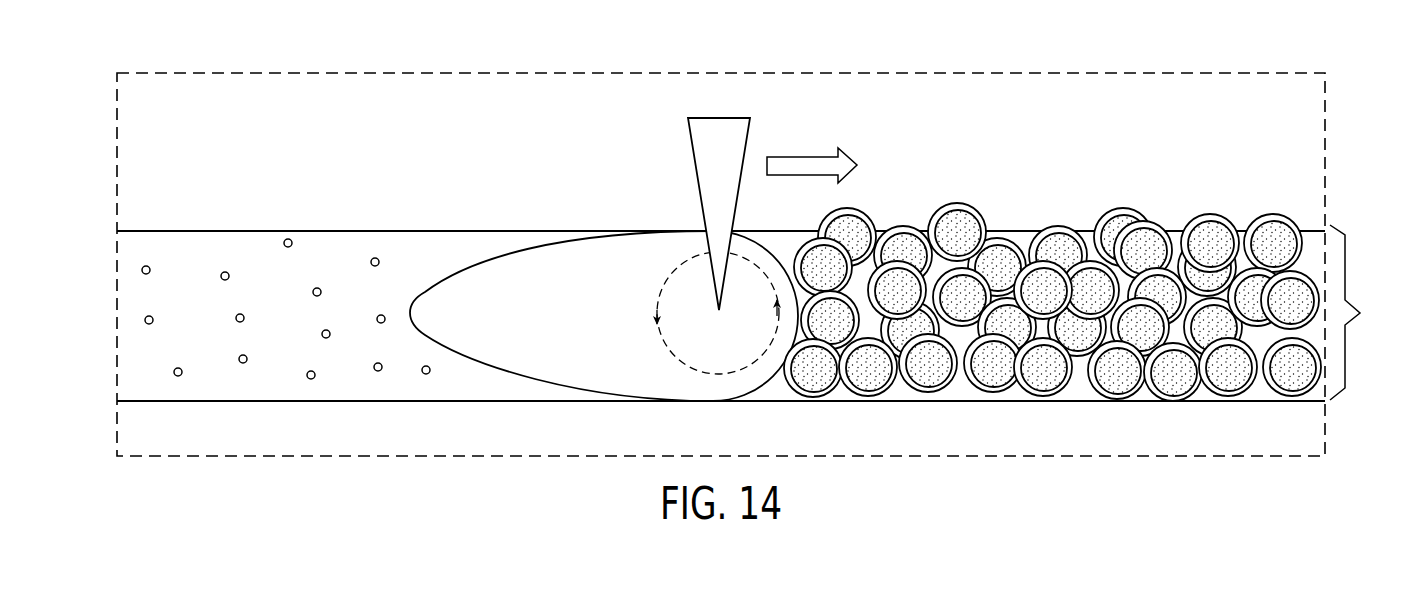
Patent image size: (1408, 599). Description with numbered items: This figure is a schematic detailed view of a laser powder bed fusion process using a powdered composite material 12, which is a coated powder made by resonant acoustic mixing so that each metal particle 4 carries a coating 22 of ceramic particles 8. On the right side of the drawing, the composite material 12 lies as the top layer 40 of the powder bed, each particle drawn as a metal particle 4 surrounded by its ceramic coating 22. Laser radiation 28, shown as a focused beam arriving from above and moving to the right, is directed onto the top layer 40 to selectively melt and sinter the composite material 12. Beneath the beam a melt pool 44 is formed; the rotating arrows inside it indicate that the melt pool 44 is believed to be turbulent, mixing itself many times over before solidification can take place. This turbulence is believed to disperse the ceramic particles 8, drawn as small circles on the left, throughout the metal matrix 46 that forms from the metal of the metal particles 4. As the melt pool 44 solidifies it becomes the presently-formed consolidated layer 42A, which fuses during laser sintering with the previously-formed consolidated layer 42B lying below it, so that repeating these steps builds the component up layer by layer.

The metal particles 4 is at (958, 228).
The ceramic particles 8 is at (233, 266).
The powdered composite material 12 is at (1181, 128).
The coating 22 is at (1072, 280).
The laser radiation 28 is at (712, 153).
The top layer 40 is at (1087, 280).
The presently-formed consolidated layer 42A is at (136, 357).
The previously-formed consolidated layer 42B is at (935, 438).
The melt pool 44 is at (521, 363).
The metal matrix 46 is at (225, 385).